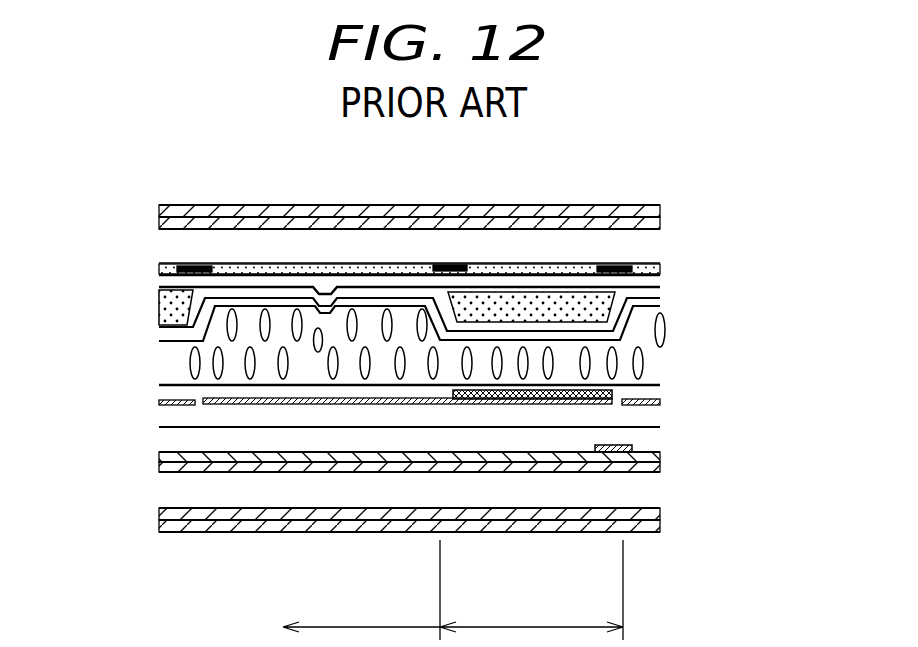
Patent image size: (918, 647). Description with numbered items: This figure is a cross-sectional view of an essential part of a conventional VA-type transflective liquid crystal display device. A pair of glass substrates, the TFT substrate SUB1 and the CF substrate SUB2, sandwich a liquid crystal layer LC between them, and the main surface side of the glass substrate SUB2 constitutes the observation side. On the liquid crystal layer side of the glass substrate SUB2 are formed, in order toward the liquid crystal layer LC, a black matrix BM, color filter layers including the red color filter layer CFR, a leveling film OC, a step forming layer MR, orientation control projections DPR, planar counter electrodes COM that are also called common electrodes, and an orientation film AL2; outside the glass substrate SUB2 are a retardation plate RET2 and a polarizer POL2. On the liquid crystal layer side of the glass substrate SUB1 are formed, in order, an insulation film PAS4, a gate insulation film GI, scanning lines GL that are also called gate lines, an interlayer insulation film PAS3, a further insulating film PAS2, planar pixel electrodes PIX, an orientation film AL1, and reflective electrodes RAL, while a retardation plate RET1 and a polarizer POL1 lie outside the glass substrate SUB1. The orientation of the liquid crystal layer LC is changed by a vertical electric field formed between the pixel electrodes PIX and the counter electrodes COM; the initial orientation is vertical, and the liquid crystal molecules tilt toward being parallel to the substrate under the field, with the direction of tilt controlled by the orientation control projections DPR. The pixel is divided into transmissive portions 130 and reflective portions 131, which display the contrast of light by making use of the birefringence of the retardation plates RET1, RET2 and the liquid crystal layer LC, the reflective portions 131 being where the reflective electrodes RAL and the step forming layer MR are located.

The polarizer POL2 is at (657, 212).
The retardation plate RET2 is at (162, 228).
The glass substrate SUB2 is at (650, 245).
The red color filter layer CFR is at (657, 268).
The black matrix BM is at (450, 265).
The leveling film OC is at (160, 287).
The step forming layer MR is at (158, 308).
The counter electrode COM is at (158, 327).
The orientation film AL2 is at (657, 297).
The orientation control projection DPR is at (328, 292).
The liquid crystal layer LC is at (675, 348).
The orientation film AL1 is at (657, 393).
The second passivation layer PAS2 is at (657, 420).
The pixel electrode PIX is at (377, 405).
The reflective electrode RAL is at (471, 400).
The interlayer insulation film PAS3 is at (168, 440).
The scanning line GL is at (615, 448).
The gate insulation film GI is at (653, 458).
The insulation film PAS4 is at (163, 465).
The glass substrate SUB1 is at (650, 493).
The retardation plate RET1 is at (163, 512).
The polarizer POL1 is at (657, 525).
The transmissive portion 130 is at (361, 613).
The reflective portion 131 is at (531, 590).